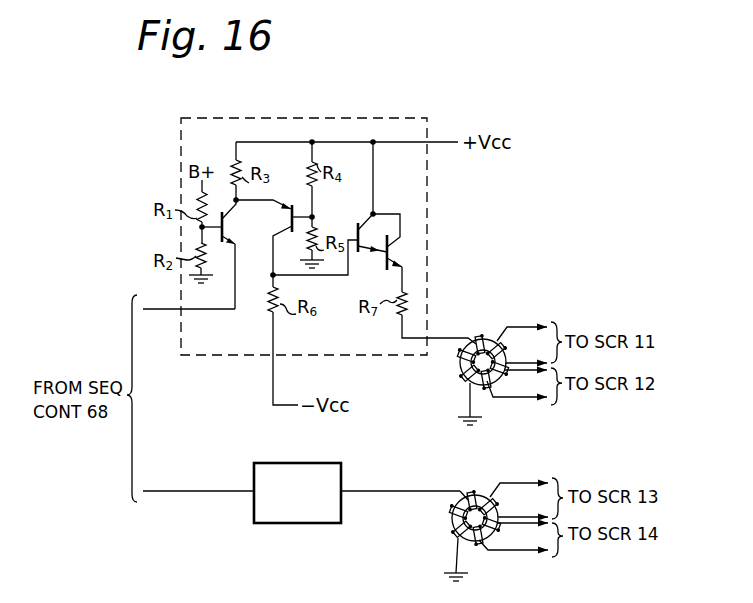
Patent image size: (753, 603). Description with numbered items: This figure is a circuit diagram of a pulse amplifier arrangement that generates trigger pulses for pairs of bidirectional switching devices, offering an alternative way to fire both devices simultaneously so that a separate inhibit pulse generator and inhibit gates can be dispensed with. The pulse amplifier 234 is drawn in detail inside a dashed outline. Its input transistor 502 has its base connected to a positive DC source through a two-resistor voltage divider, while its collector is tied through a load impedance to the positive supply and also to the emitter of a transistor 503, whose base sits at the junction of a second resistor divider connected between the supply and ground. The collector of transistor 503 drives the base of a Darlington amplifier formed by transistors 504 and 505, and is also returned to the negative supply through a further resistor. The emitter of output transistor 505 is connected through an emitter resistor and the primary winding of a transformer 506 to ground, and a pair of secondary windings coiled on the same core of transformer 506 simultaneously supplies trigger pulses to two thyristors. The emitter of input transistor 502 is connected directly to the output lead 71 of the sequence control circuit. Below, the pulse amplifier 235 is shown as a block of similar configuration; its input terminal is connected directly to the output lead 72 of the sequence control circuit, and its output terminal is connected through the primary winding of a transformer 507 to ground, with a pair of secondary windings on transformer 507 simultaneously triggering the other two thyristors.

The pulse amplifier 234 is at (254, 118).
The pulse amplifier 235 is at (342, 477).
The transistor 502 is at (225, 227).
The transistor 503 is at (299, 209).
The transistor 504 is at (362, 220).
The output transistor 505 is at (378, 262).
The transformer 506 is at (481, 333).
The transformer 507 is at (474, 488).
The output lead of sequence control circuit 71 is at (151, 311).
The output lead of sequence control circuit 72 is at (158, 493).